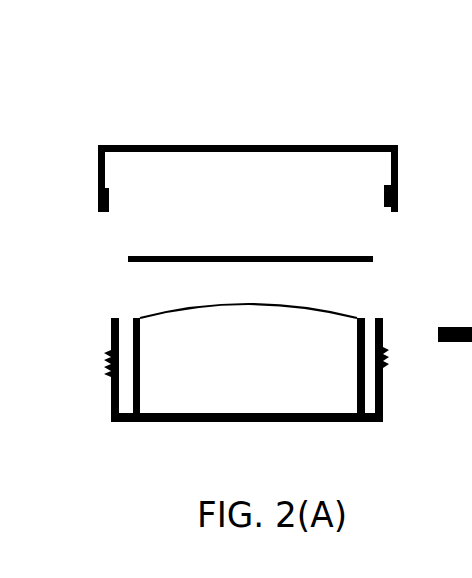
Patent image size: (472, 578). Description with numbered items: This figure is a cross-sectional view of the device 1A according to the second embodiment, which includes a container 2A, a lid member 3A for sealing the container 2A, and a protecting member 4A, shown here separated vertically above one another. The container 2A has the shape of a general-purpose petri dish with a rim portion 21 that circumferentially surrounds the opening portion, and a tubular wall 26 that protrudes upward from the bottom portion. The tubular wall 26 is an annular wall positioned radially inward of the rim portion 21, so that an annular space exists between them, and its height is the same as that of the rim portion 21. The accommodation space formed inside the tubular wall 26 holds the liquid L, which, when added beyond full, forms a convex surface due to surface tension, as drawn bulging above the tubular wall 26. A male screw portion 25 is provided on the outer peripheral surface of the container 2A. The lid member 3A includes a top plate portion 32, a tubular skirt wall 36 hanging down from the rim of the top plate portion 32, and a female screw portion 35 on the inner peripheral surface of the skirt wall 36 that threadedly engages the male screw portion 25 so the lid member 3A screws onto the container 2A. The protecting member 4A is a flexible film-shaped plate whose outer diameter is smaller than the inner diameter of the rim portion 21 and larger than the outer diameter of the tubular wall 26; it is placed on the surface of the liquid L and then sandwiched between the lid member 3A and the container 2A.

The device 1A is at (152, 47).
The container 2A is at (95, 358).
The lid member 3A is at (253, 135).
The protecting member 4A is at (107, 245).
The rim portion 21 is at (378, 320).
The male screw portion 25 is at (389, 365).
The tubular wall 26 is at (362, 398).
The top plate portion 32 is at (115, 143).
The female screw portion 35 is at (400, 195).
The skirt wall 36 is at (400, 160).
The liquid L is at (248, 348).